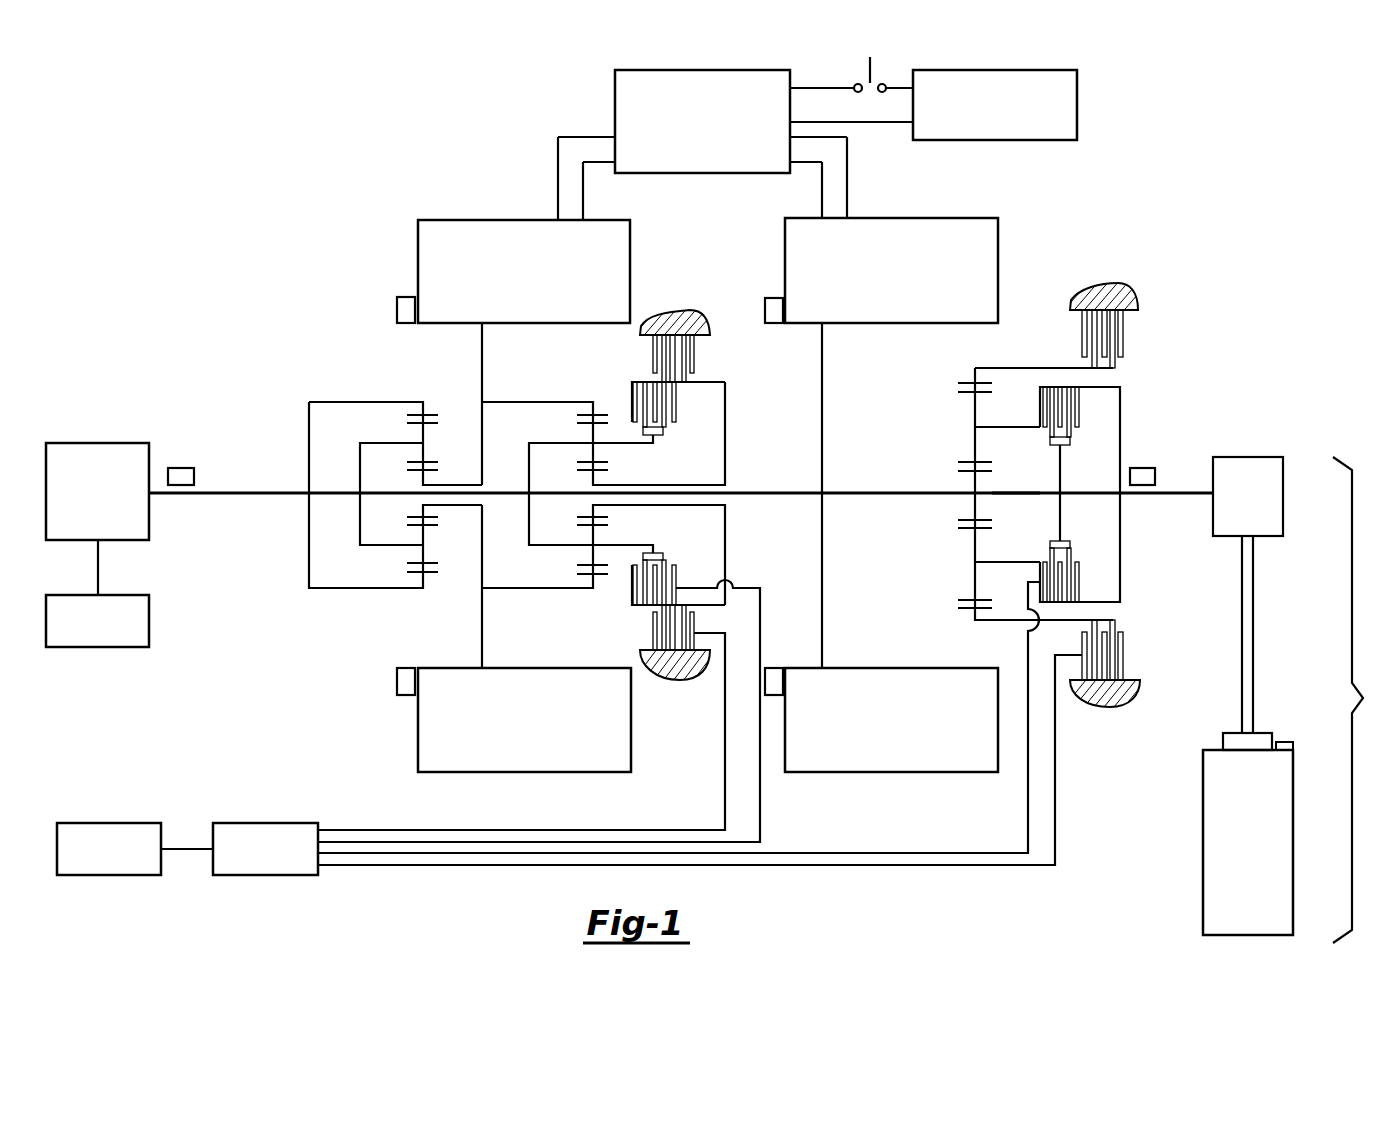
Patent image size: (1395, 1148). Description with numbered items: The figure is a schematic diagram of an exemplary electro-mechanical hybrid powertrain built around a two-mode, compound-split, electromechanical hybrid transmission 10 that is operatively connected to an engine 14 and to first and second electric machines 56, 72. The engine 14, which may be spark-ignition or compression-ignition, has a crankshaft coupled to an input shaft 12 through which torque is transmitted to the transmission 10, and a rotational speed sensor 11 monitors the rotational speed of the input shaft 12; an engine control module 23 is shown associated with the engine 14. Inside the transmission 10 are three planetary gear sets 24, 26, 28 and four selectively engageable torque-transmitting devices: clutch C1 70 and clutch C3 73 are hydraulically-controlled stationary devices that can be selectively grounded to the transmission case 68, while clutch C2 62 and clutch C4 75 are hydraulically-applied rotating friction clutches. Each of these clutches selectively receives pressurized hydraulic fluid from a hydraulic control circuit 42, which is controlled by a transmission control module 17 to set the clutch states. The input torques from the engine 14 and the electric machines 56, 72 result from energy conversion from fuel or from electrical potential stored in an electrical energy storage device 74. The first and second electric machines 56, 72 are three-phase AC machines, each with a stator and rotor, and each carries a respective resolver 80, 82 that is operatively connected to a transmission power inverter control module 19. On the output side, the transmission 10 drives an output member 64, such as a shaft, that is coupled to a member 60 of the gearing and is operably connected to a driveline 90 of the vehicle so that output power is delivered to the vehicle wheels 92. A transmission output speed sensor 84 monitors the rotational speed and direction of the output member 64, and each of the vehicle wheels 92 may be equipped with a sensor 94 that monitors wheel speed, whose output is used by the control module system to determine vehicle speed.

The transmission 10 is at (248, 145).
The rotational speed sensor 11 is at (182, 468).
The input shaft 12 is at (250, 492).
The engine 14 is at (89, 503).
The transmission control module 17 is at (99, 862).
The transmission power inverter control module 19 is at (694, 132).
The engine control module 23 is at (89, 635).
The first planetary gear set 24 is at (421, 385).
The second planetary gear set 26 is at (591, 385).
The third planetary gear set 28 is at (964, 372).
The hydraulic control circuit 42 is at (256, 862).
The first electric machine 56 is at (516, 285).
The output member 60 is at (1018, 492).
The clutch C2 62 is at (1083, 436).
The output member 64 is at (1195, 492).
The transmission case 68 is at (681, 312).
The clutch C1 70 is at (1054, 334).
The second electric machine 72 is at (883, 285).
The clutch C3 73 is at (712, 357).
The electrical energy storage device 74 is at (984, 115).
The clutch C4 75 is at (685, 420).
The resolver 80 is at (397, 310).
The resolver 82 is at (765, 306).
The transmission output speed sensor 84 is at (1145, 468).
The driveline 90 is at (1295, 700).
The vehicle wheels 92 is at (1239, 838).
The sensor 94 is at (1285, 741).